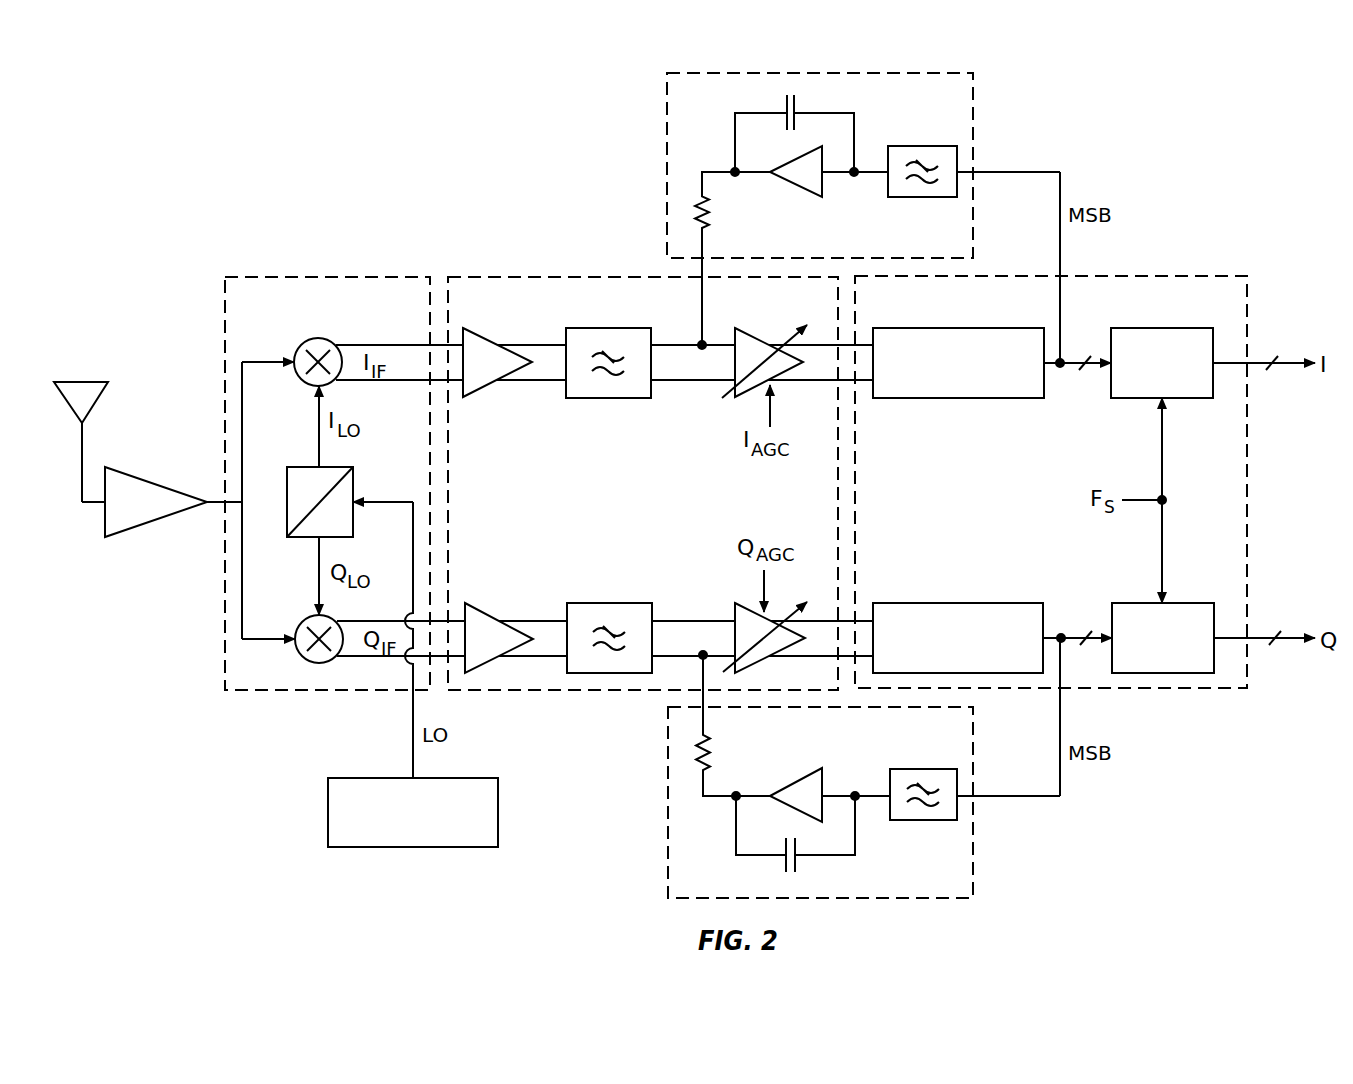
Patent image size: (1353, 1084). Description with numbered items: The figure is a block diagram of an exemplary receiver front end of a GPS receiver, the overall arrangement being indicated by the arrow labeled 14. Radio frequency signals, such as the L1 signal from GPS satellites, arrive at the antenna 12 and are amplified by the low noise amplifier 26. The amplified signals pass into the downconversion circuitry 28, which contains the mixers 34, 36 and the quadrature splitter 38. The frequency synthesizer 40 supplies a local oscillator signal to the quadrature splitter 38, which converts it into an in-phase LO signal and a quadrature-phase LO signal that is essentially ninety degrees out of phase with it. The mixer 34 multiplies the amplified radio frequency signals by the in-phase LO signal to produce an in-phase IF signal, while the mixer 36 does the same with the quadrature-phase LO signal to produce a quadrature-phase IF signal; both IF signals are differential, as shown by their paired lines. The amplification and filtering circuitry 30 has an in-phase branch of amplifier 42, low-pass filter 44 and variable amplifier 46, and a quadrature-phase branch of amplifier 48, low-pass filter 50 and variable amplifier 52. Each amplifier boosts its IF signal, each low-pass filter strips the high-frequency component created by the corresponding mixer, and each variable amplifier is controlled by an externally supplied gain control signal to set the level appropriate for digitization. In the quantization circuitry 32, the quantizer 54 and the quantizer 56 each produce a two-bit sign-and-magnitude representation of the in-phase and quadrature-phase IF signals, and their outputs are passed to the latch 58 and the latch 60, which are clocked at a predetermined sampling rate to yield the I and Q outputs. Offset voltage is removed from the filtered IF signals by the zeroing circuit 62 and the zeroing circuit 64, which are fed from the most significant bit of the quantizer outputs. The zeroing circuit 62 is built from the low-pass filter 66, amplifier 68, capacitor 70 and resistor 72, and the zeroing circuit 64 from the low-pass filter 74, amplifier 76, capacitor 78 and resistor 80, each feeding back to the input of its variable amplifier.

The antenna 12 is at (90, 382).
The receiver 14 is at (1207, 117).
The low noise amplifier 26 is at (137, 478).
The downconversion circuitry 28 is at (355, 277).
The amplification and filtering circuitry 30 is at (505, 277).
The quantization circuitry 32 is at (1143, 276).
The mixer 34 is at (306, 341).
The mixer 36 is at (306, 618).
The quadrature splitter 38 is at (300, 467).
The frequency synthesizer 40 is at (498, 797).
The amplifier 42 is at (487, 337).
The low-pass filter 44 is at (622, 328).
The variable amplifier 46 is at (748, 333).
The amplifier 48 is at (487, 613).
The low-pass filter 50 is at (622, 603).
The variable amplifier 52 is at (758, 662).
The quantizer 54 is at (987, 328).
The quantizer 56 is at (988, 603).
The latch 58 is at (1162, 328).
The latch 60 is at (1178, 603).
The zeroing circuit 62 is at (973, 120).
The zeroing circuit 64 is at (973, 840).
The low-pass filter 66 is at (908, 146).
The amplifier 68 is at (793, 190).
The capacitor 70 is at (797, 103).
The resistor 72 is at (708, 223).
The low-pass filter 74 is at (908, 820).
The amplifier 76 is at (795, 780).
The capacitor 78 is at (797, 867).
The resistor 80 is at (708, 752).